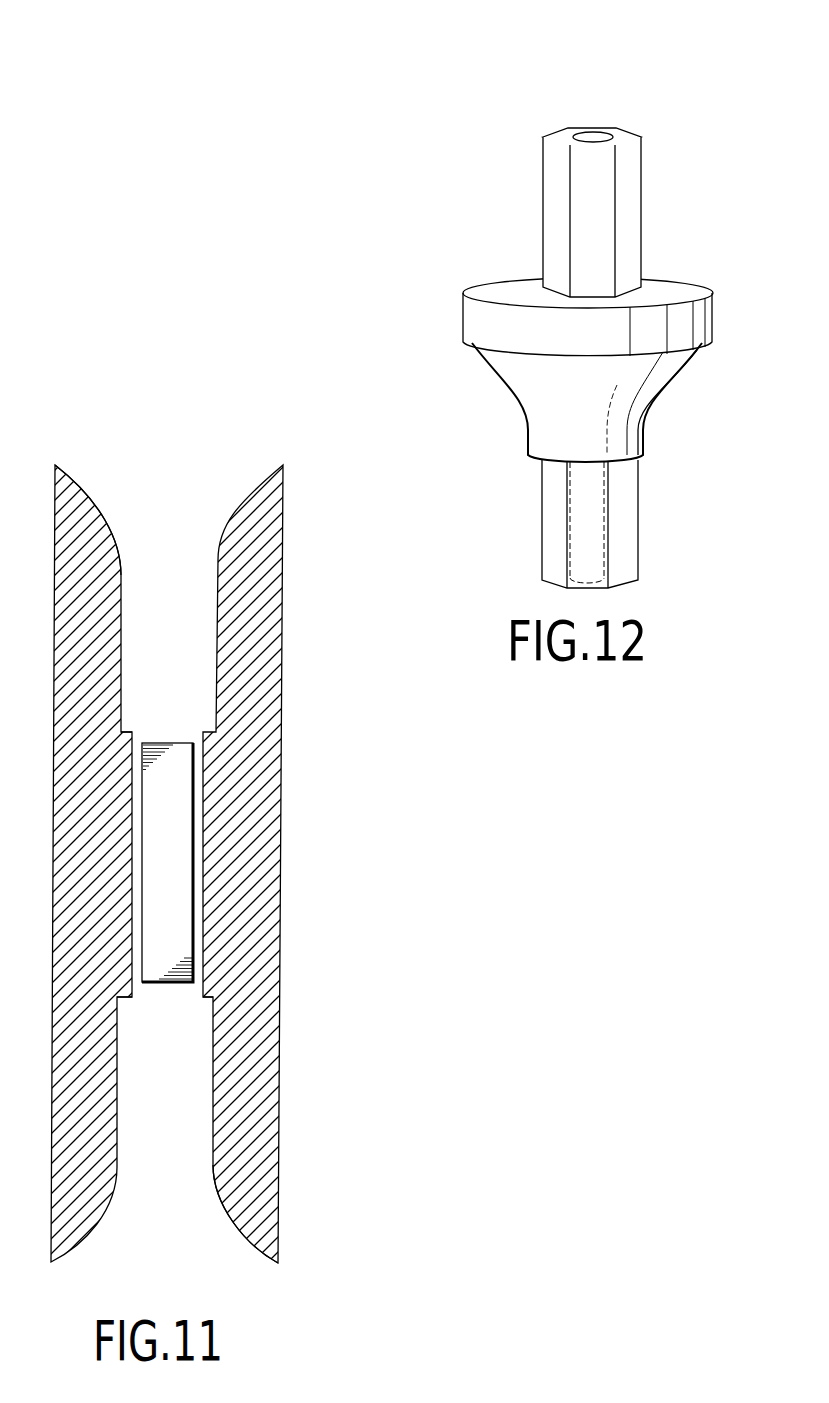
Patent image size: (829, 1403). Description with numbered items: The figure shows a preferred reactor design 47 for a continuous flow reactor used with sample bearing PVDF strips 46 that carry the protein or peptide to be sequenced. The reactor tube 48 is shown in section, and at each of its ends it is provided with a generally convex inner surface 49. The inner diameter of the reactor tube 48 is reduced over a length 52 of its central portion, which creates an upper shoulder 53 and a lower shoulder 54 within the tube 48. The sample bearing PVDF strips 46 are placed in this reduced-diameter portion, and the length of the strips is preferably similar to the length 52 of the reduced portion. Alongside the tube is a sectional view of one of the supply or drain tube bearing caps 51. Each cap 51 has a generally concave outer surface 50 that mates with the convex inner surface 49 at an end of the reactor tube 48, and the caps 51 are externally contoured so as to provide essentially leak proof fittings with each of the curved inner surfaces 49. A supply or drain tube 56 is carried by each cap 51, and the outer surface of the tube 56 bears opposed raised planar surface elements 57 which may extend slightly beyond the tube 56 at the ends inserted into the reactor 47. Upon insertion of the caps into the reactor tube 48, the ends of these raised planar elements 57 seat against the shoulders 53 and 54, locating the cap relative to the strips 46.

In FIG. 11, the sample bearing PVDF strip 46 is at (167, 812).
In FIG. 11, the reactor design 47 is at (228, 864).
In FIG. 11, the reactor tube 48 is at (282, 1105).
In FIG. 11, the convex inner surface 49 is at (93, 497).
In FIG. 12, the concave outer surface 50 is at (510, 388).
In FIG. 12, the supply or drain tube bearing cap 51 is at (693, 397).
In FIG. 11, the length of reduced inner diameter 52 is at (203, 997).
In FIG. 11, the upper shoulder 53 is at (123, 728).
In FIG. 11, the lower shoulder 54 is at (120, 997).
In FIG. 12, the supply or drain tube 56 is at (537, 217).
In FIG. 12, the raised planar surface element 57 is at (583, 120).